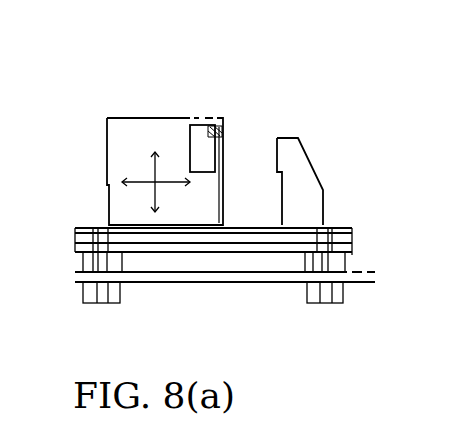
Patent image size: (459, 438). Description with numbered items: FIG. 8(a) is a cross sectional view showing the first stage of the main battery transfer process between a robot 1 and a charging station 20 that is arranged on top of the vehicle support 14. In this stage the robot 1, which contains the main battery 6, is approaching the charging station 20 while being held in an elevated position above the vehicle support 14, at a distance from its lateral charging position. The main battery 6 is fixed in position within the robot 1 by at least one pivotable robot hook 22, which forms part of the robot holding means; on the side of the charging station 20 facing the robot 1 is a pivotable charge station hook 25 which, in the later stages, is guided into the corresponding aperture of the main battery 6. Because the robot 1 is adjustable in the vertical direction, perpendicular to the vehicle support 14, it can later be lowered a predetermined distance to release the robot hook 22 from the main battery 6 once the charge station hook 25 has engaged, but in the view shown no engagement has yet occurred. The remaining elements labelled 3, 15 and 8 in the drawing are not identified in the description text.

The robot 1 is at (238, 86).
The component mounting apparatus 3 is at (348, 64).
The main battery 6 is at (197, 118).
The robot hook 22 is at (222, 121).
The charge station hook 25 is at (274, 138).
The charging station 20 is at (300, 181).
The vehicle support 14 is at (75, 245).
The support leg 15 is at (80, 294).
The base 8 is at (225, 299).